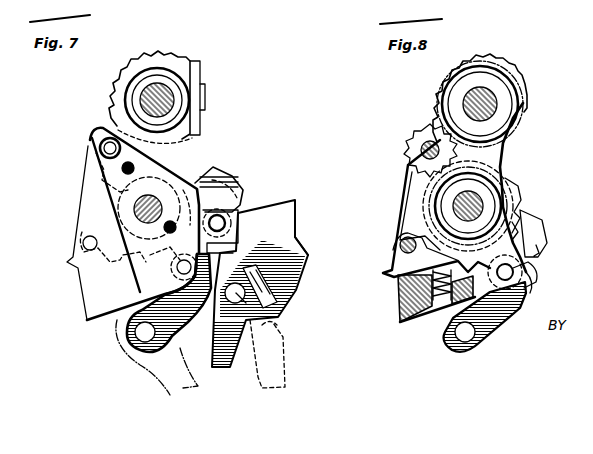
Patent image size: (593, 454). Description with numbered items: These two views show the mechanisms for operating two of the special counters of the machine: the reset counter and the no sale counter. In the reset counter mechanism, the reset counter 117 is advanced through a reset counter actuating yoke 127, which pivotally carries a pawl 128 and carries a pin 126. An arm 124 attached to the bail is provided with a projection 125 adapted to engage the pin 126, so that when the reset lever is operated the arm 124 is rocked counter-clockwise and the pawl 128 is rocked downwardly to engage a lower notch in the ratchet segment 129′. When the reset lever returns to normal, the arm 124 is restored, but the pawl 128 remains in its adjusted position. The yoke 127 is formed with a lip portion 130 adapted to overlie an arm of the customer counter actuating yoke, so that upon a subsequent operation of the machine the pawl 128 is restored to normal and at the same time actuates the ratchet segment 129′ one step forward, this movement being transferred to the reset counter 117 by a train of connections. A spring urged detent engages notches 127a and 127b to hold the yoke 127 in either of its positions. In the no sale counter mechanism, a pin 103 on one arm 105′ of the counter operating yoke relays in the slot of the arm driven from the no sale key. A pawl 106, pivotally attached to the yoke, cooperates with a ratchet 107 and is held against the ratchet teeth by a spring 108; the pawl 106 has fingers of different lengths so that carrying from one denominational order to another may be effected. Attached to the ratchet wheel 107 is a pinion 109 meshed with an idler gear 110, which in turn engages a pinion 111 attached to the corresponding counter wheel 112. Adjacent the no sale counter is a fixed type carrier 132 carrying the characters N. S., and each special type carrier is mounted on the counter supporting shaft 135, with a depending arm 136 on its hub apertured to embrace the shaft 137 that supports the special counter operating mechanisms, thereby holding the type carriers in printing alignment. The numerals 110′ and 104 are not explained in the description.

In FIG. 7, the reset counter 117 is at (164, 58).
In FIG. 7, the counter supporting shaft 135 is at (147, 100).
In FIG. 8, the counter supporting shaft 135 is at (480, 96).
In FIG. 7, the ratchet segment 129′ is at (97, 204).
In FIG. 7, the shaft 137 is at (146, 210).
In FIG. 8, the shaft 137 is at (473, 207).
In FIG. 7, the pawl 128 is at (228, 182).
In FIG. 7, the lip portion 130 is at (236, 187).
In FIG. 7, the reset counter actuating yoke 127 is at (260, 283).
In FIG. 8, the reset counter actuating yoke 127 is at (578, 101).
In FIG. 7, the notch 127a is at (297, 238).
In FIG. 7, the projection 125 is at (280, 280).
In FIG. 7, the pin 126 is at (265, 300).
In FIG. 7, the arm 124 is at (277, 342).
In FIG. 7, the notch 127b is at (275, 323).
In FIG. 7, the trigger guard 110′ is at (165, 372).
In FIG. 8, the counter wheel 112 is at (440, 84).
In FIG. 8, the pinion 111 is at (437, 97).
In FIG. 8, the fixed type carrier 132 is at (514, 88).
In FIG. 8, the idler gear 110 is at (405, 144).
In FIG. 8, the depending arm 136 is at (500, 157).
In FIG. 8, the ratchet 107 is at (521, 203).
In FIG. 8, the pinion 109 is at (525, 206).
In FIG. 8, the pawl 106 is at (540, 238).
In FIG. 8, the spring 108 is at (514, 272).
In FIG. 8, the sear spring 104 is at (525, 288).
In FIG. 8, the arm of counter operating yoke 105′ is at (523, 300).
In FIG. 8, the pin 103 is at (484, 338).